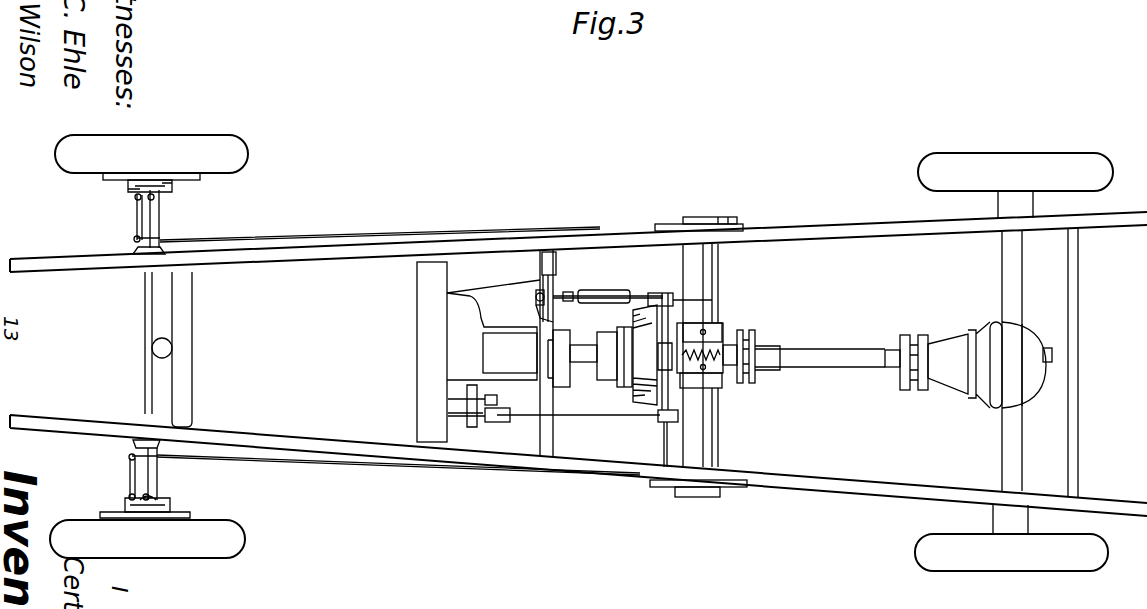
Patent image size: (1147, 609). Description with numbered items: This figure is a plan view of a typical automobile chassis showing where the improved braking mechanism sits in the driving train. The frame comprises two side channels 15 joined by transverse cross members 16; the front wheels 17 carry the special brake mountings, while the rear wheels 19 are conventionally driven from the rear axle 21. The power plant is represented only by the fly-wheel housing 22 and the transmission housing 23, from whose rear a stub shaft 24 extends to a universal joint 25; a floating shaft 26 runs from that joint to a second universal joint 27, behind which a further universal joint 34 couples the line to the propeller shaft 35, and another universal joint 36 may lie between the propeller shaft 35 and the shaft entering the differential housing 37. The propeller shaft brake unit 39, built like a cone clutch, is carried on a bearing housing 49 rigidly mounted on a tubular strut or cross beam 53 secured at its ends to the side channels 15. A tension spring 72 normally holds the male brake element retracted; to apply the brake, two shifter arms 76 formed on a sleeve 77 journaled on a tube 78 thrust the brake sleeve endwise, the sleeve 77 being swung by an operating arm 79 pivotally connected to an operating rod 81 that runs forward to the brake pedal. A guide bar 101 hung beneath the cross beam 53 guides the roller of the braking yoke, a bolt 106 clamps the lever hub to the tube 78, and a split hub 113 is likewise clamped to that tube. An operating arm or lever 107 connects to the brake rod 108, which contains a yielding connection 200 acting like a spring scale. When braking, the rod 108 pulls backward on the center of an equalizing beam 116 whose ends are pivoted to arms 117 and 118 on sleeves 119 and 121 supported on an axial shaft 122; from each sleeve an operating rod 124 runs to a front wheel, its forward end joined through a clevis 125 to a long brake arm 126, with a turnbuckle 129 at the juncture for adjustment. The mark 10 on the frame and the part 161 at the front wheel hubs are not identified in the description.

The vehicle chassis 10 is at (595, 238).
The side channels 15 is at (363, 258).
The transverse cross members 16 is at (1074, 272).
The front wheels 17 is at (240, 152).
The rear wheels 19 is at (918, 178).
The rear axle 21 is at (1008, 448).
The fly-wheel housing 22 is at (465, 355).
The transmission housing 23 is at (523, 373).
The stub shaft 24 is at (547, 353).
The universal joint 25 is at (565, 373).
The shaft 26 is at (586, 328).
The second universal joint 27 is at (618, 388).
The universal joint 34 is at (746, 332).
The propeller shaft 35 is at (835, 349).
The universal joint 36 is at (913, 336).
The differential housing 37 is at (958, 374).
The propeller shaft brake unit 39 is at (642, 318).
The bearing housing 49 is at (717, 397).
The tubular strut or cross beam 53 is at (720, 268).
The tension spring 72 is at (722, 376).
The shifter arms 76 is at (646, 355).
The sleeve 77 is at (672, 402).
The sleeve or tube 78 is at (663, 455).
The operating arm 79 is at (666, 423).
The operating rod 81 is at (647, 422).
The guide bar 101 is at (690, 314).
The bolt 106 is at (676, 302).
The operating arm or lever 107 is at (657, 293).
The operating rod 108 is at (620, 295).
The split hub 113 is at (658, 418).
The equalizing beam 116 is at (536, 297).
The arm 117 is at (543, 284).
The arm 118 is at (538, 314).
The sleeve 119 is at (556, 262).
The sleeve 121 is at (547, 425).
The axial shaft 122 is at (493, 276).
The operating rod 124 is at (281, 240).
The clevis 125 is at (136, 241).
The long brake arm 126 is at (137, 219).
The turnbuckle or adjustment 129 is at (160, 232).
The wheel mounting plate 161 is at (190, 515).
The yielding connection 200 is at (596, 307).